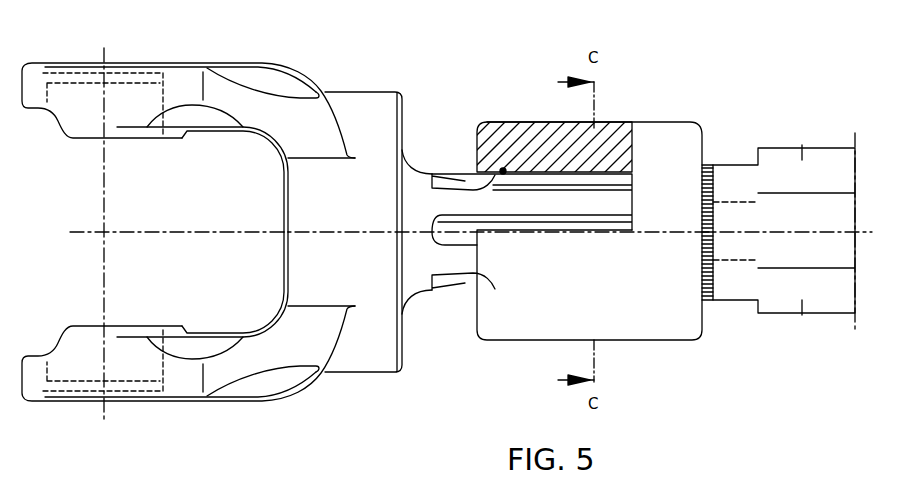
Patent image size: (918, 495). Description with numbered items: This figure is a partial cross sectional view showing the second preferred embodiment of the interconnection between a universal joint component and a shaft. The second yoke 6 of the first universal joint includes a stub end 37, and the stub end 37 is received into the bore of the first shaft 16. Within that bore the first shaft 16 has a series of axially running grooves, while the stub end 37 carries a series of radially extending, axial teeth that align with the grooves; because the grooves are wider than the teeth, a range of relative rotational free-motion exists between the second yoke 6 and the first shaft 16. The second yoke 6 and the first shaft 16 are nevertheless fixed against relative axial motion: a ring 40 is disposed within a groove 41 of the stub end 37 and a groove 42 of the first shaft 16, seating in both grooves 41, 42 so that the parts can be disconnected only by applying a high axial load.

The second yoke 6 is at (297, 70).
The first shaft 16 is at (727, 163).
The stub end 37 is at (600, 197).
The ring 40 is at (507, 170).
The groove 41 is at (458, 172).
The groove 42 is at (503, 168).